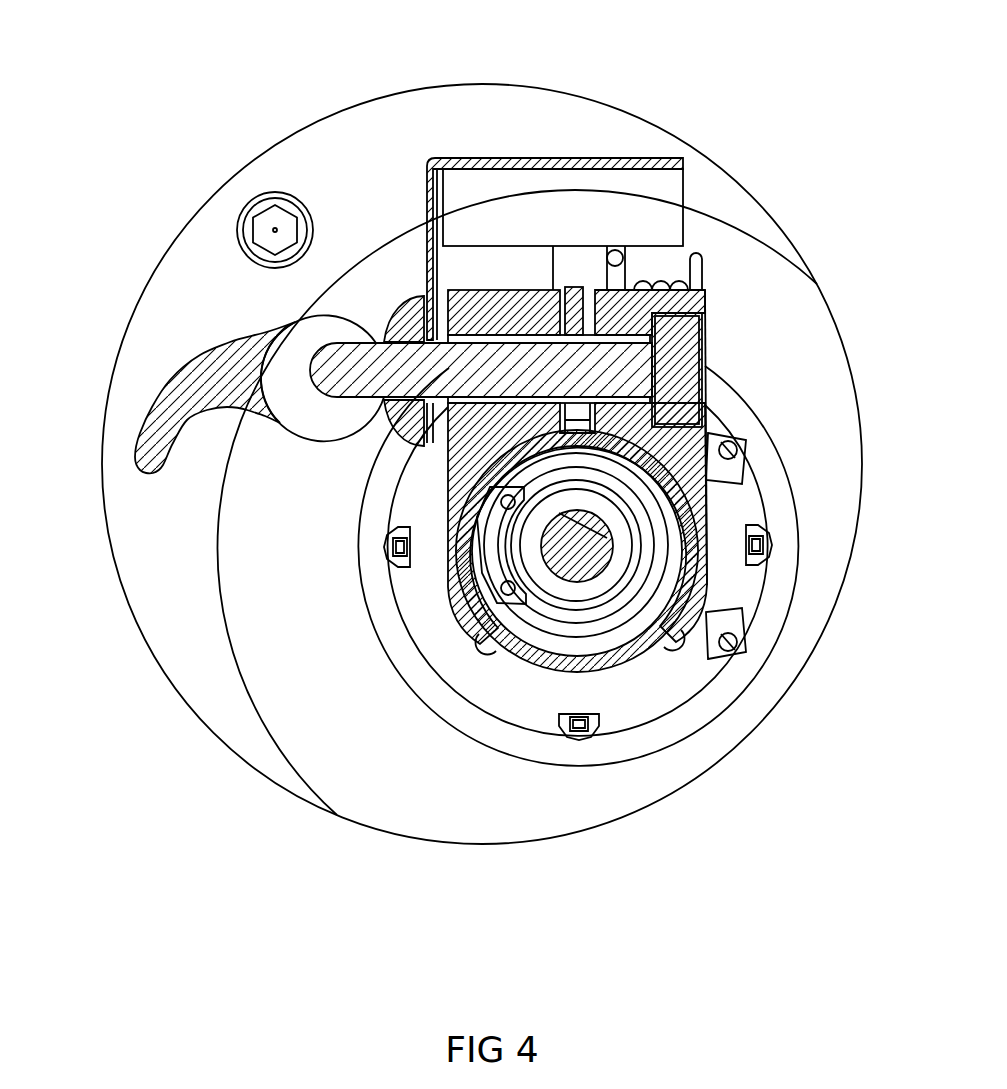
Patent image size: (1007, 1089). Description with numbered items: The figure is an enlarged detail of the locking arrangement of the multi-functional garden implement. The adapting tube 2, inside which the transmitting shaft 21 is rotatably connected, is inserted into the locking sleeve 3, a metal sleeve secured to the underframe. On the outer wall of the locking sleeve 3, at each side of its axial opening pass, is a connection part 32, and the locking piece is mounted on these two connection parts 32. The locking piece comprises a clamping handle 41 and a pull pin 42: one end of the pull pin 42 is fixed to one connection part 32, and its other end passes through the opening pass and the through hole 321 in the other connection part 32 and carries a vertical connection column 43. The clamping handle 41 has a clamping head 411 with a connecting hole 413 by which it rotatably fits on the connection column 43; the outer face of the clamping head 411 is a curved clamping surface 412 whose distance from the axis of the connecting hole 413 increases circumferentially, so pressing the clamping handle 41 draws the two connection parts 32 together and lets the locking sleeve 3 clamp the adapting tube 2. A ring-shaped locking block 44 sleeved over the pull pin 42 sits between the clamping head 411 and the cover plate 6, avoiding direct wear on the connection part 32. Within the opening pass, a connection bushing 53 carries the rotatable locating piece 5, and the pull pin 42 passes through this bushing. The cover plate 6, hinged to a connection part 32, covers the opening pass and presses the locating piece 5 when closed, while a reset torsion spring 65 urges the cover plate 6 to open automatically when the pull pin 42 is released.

The adapting tube 2 is at (578, 650).
The transmitting shaft 21 is at (576, 547).
The locking sleeve 3 is at (643, 645).
The connection part 32 is at (500, 420).
The through hole 321 is at (500, 337).
The clamping handle 41 is at (197, 390).
The clamping head 411 is at (297, 400).
The clamping surface 412 is at (332, 447).
The connecting hole 413 is at (300, 340).
The pull pin 42 is at (593, 373).
The connection column 43 is at (330, 367).
The locking block 44 is at (397, 322).
The locating piece 5 is at (569, 312).
The connection bushing 53 is at (613, 337).
The cover plate 6 is at (668, 163).
The reset torsion spring 65 is at (630, 262).